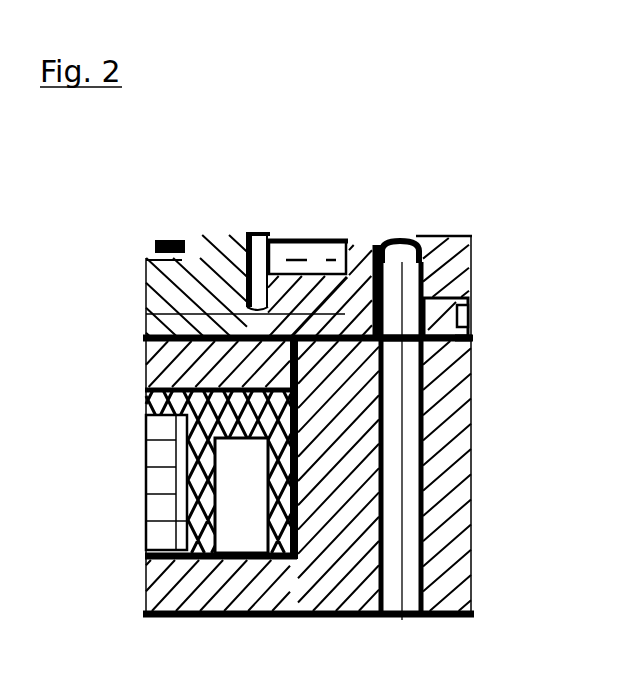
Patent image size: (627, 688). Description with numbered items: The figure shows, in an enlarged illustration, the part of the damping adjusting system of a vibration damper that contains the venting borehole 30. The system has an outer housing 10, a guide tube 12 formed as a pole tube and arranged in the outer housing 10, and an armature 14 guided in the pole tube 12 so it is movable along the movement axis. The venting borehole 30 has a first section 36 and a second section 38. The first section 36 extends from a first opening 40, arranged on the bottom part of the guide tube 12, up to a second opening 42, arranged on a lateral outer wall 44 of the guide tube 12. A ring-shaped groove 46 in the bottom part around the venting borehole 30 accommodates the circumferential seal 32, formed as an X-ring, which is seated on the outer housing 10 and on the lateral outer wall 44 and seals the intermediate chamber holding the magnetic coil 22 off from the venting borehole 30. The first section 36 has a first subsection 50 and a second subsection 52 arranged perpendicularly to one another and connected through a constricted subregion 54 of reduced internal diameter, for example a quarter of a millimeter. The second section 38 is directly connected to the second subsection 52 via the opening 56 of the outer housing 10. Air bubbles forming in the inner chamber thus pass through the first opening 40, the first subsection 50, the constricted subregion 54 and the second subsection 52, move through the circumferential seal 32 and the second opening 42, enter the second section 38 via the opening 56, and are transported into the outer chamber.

The outer housing 10 is at (188, 618).
The guide tube 12 is at (161, 364).
The armature 14 is at (203, 267).
The magnetic coil 22 is at (158, 510).
The venting borehole 30 is at (415, 573).
The circumferential seal 32 is at (462, 341).
The first section 36 is at (430, 251).
The second section 38 is at (425, 507).
The first opening 40 is at (253, 238).
The second opening 42 is at (399, 328).
The lateral outer wall 44 is at (311, 345).
The ring-shaped groove 46 is at (146, 314).
The first subsection 50 is at (319, 257).
The second subsection 52 is at (468, 303).
The constricted subregion 54 is at (367, 246).
The opening 56 is at (405, 343).